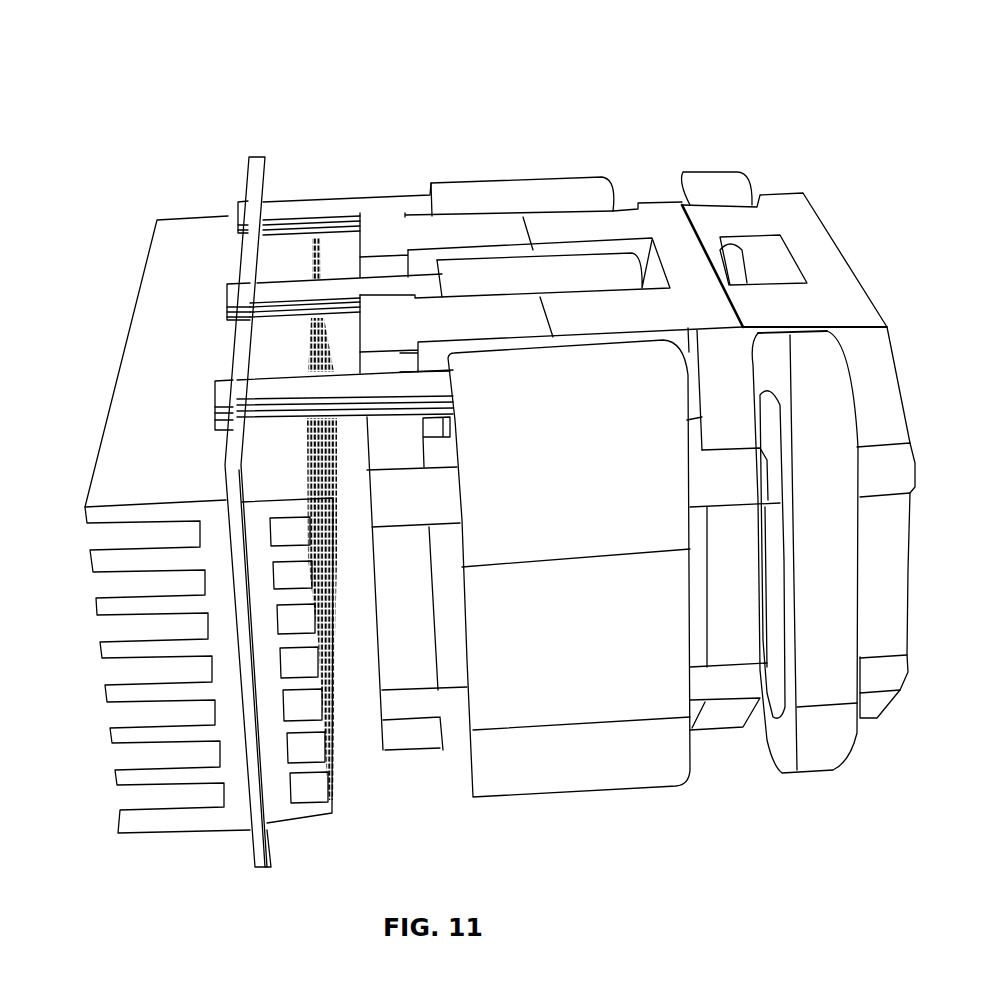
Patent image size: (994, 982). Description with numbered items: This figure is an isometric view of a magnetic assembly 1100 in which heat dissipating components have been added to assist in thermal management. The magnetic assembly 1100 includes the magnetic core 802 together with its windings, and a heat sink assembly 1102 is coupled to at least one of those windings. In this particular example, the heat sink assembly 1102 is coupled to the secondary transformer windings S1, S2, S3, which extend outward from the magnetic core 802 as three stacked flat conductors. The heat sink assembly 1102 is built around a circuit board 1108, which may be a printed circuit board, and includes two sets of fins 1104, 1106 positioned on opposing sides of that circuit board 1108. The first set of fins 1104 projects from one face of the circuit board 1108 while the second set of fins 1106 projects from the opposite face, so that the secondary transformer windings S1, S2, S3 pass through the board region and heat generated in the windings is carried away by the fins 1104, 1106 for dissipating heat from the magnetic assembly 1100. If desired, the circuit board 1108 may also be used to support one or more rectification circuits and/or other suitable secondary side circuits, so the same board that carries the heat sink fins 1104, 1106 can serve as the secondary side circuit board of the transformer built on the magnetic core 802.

The magnetic assembly 1100 is at (134, 47).
The heat sink assembly 1102 is at (164, 184).
The fins 1104 is at (116, 455).
The fins 1106 is at (306, 814).
The circuit board 1108 is at (258, 851).
The secondary transformer winding S1 is at (311, 205).
The secondary transformer winding S2 is at (261, 296).
The secondary transformer winding S3 is at (251, 395).
The magnetic core 802 is at (816, 226).